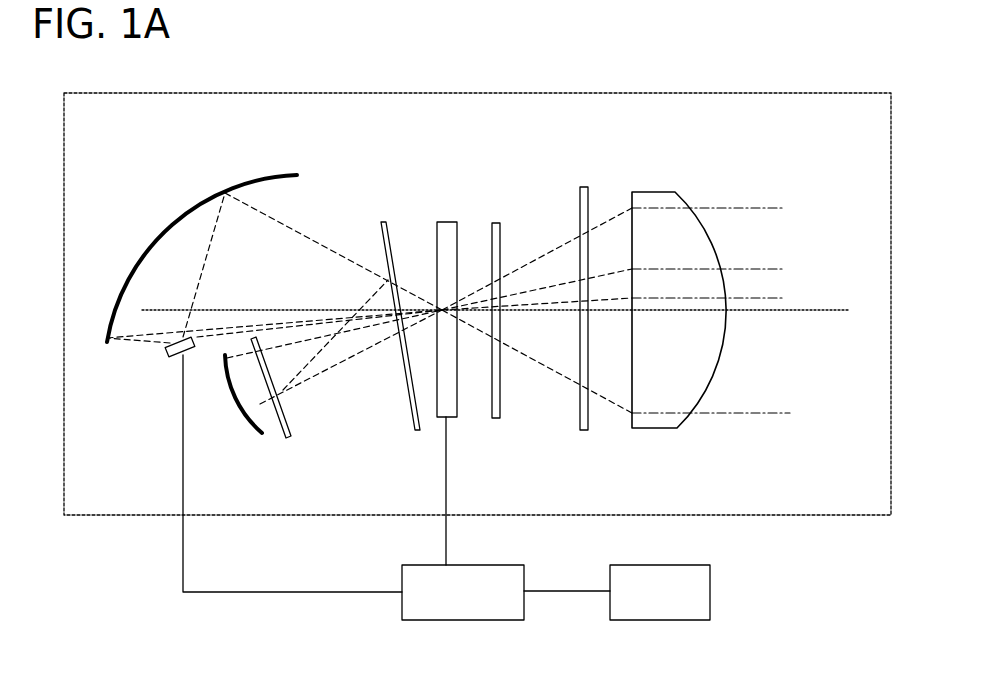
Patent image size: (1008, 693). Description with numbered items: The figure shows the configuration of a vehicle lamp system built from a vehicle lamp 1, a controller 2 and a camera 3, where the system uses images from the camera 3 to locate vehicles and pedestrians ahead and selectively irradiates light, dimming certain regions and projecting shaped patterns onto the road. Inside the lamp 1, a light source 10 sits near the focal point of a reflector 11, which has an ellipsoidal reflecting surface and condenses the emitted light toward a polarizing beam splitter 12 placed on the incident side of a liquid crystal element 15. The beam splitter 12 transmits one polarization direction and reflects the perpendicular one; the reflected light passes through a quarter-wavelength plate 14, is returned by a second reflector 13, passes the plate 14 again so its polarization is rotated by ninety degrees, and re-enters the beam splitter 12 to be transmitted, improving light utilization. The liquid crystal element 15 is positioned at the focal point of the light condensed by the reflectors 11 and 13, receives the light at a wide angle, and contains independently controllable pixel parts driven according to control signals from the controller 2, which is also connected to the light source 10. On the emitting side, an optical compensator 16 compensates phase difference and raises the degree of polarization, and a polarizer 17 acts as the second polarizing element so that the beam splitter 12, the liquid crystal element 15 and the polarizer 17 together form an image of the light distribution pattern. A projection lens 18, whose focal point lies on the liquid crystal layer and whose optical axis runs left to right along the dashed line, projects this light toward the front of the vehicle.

The vehicle lamp 1 is at (850, 515).
The controller 2 is at (487, 563).
The camera 3 is at (677, 563).
The light source 10 is at (170, 352).
The reflector 11 is at (262, 176).
The polarizing beam splitter 12 is at (385, 221).
The reflector 13 is at (257, 432).
The ¼-wavelength plate 14 is at (288, 437).
The liquid crystal element 15 is at (447, 222).
The optical compensator 16 is at (495, 223).
The polarizer 17 is at (583, 187).
The projection lens 18 is at (650, 192).